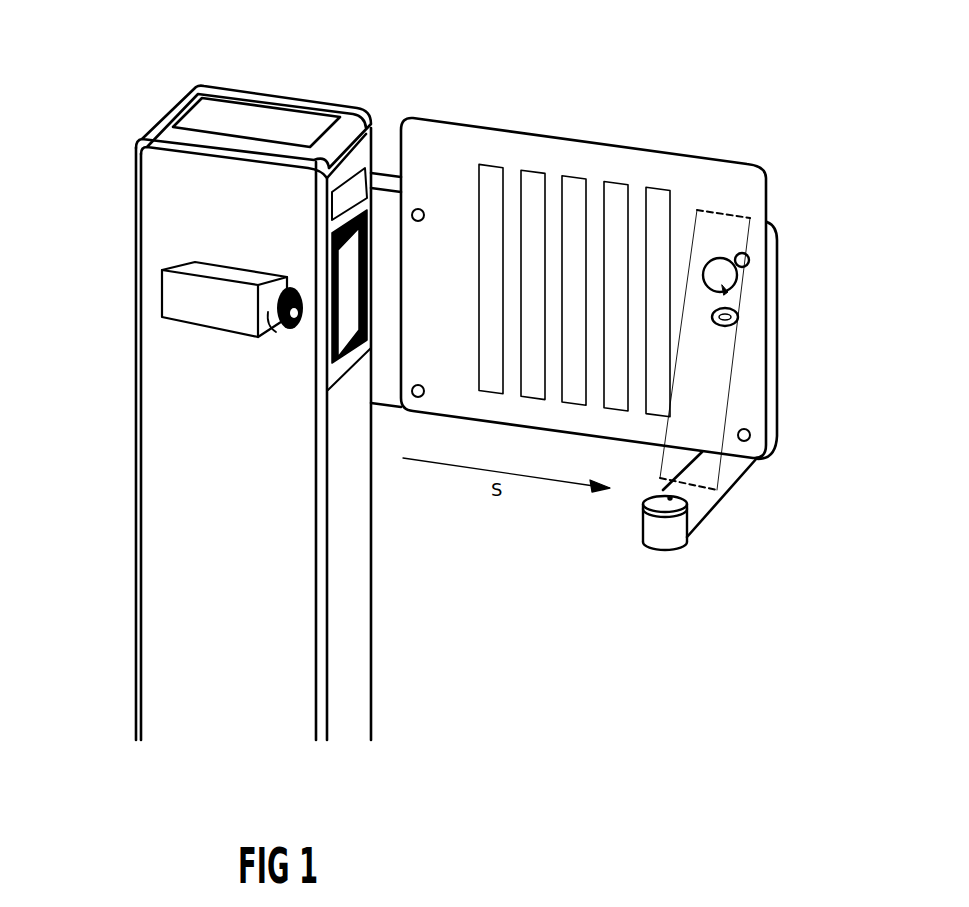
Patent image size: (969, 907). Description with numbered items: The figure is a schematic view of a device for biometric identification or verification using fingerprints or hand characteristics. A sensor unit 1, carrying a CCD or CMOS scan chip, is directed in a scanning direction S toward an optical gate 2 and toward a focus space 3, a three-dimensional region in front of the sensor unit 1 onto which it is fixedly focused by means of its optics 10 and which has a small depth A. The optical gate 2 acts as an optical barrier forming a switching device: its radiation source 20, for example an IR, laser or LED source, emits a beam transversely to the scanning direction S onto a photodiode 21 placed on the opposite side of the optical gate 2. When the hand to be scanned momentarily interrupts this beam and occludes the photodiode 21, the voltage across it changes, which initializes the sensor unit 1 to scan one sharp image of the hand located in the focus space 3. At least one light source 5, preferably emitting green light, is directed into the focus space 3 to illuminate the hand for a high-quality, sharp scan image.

The sensor unit 1 is at (190, 266).
The optics 10 is at (277, 290).
The light source 5 is at (490, 183).
The focus space 3 is at (752, 217).
The photodiode 21 is at (728, 288).
The radiation source 20 is at (663, 494).
The optical gate 2 is at (670, 534).